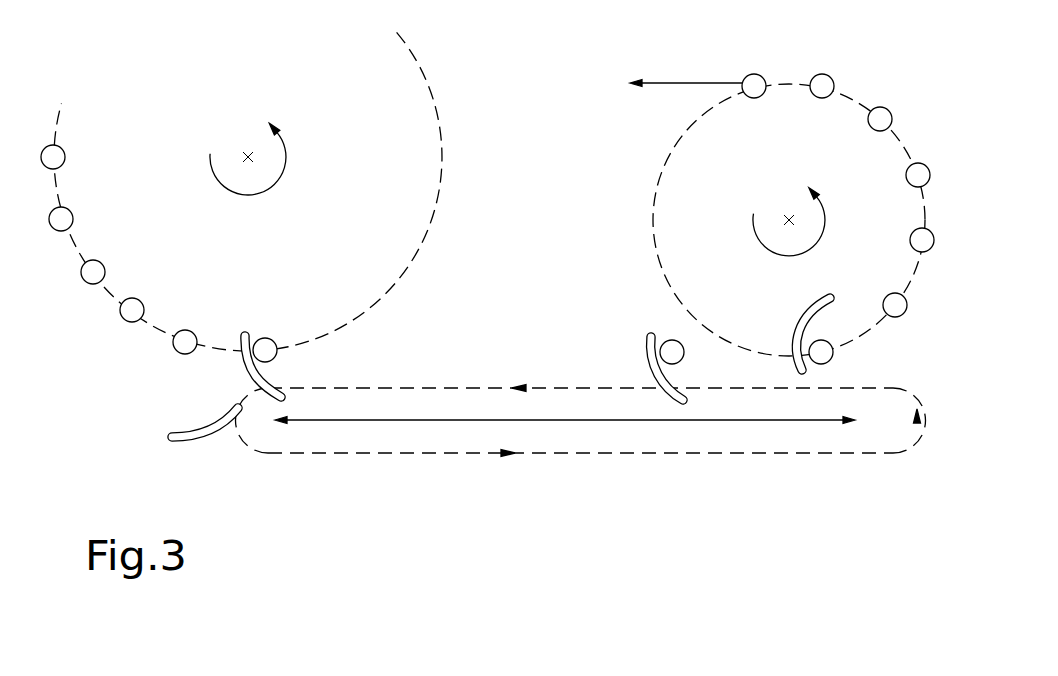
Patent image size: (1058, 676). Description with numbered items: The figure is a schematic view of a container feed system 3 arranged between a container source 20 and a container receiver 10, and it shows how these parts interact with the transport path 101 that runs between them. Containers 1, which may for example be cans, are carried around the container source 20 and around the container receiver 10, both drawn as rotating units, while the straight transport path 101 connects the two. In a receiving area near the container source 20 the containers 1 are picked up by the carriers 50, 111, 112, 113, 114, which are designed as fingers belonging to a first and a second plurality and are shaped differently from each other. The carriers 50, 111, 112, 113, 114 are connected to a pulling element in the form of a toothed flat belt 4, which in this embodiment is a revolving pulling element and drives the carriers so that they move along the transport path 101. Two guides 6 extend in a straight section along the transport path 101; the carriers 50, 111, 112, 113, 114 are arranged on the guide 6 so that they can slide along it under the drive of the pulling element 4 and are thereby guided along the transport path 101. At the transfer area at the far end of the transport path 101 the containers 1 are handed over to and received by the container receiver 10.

The container 1 is at (68, 217).
The container feed system 3 is at (486, 274).
The toothed flat belt 4 is at (230, 440).
The guide 6 is at (580, 387).
The container receiver 10 is at (790, 187).
The container source 20 is at (381, 132).
The carrier 50 is at (434, 407).
The transport path 101 is at (581, 420).
The carrier 111 is at (434, 407).
The carrier 112 is at (434, 407).
The carrier 113 is at (434, 407).
The carrier 114 is at (652, 338).